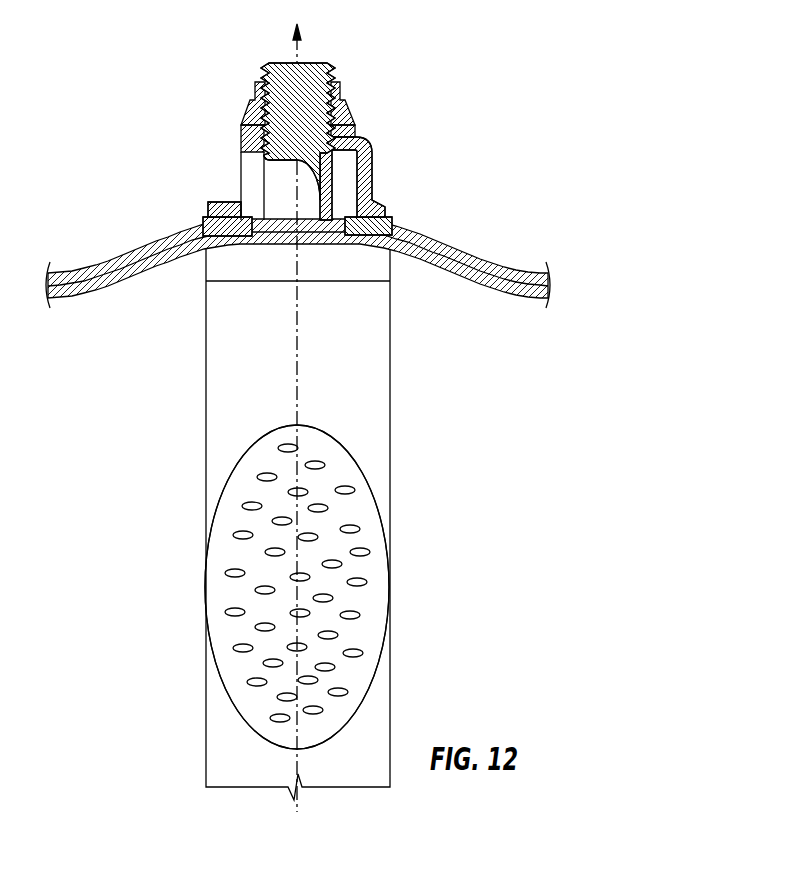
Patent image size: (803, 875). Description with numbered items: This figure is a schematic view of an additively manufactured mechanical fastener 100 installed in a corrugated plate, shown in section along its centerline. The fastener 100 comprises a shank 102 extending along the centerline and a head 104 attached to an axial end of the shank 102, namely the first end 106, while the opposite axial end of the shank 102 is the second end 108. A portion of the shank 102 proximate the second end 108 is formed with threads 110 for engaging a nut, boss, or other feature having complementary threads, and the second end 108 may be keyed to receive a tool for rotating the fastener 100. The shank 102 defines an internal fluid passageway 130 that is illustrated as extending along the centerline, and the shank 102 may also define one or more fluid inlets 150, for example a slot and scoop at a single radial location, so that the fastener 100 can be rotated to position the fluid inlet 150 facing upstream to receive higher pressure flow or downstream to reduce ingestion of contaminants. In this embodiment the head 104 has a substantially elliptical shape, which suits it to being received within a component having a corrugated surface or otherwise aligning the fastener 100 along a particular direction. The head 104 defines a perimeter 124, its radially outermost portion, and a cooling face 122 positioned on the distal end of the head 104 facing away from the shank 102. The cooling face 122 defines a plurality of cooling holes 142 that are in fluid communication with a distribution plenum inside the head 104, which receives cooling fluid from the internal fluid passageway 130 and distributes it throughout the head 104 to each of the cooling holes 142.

The fastener 100 is at (218, 55).
The second end 108 is at (340, 55).
The threads 110 is at (342, 92).
The shank 102 is at (308, 127).
The fluid inlet 150 is at (252, 187).
The internal fluid passageway 130 is at (315, 197).
The first end 106 is at (350, 210).
The head 104 is at (390, 568).
The perimeter 124 is at (360, 448).
The cooling face 122 is at (366, 507).
The cooling holes 142 is at (231, 611).